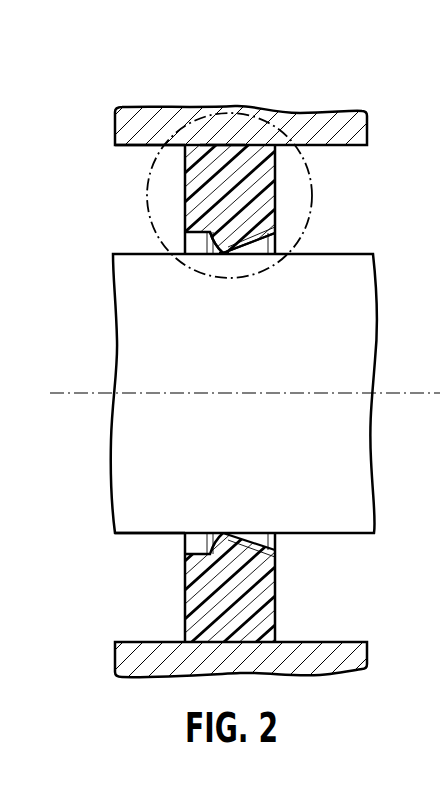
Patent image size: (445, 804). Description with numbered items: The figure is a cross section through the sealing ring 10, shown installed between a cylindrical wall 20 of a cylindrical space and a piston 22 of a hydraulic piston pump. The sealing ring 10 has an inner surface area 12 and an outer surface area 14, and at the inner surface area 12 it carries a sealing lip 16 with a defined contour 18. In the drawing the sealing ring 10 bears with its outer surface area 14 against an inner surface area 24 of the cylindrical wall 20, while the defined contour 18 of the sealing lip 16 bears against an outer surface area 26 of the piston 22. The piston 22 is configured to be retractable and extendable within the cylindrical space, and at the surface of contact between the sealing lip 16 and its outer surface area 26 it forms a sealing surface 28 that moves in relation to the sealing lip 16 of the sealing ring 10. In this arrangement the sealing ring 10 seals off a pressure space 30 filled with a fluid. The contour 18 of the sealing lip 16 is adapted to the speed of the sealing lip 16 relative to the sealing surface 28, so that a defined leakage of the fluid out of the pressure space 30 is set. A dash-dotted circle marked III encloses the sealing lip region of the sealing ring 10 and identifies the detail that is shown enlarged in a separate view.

The sealing ring 10 is at (270, 188).
The inner surface area 12 is at (216, 248).
The outer surface area 14 is at (222, 133).
The sealing lip 16 is at (258, 223).
The defined contour 18 is at (260, 540).
The cylindrical wall 20 is at (282, 118).
The piston 22 is at (358, 353).
The inner surface area of the cylindrical wall 24 is at (140, 147).
The outer surface area of the piston 26 is at (120, 535).
The sealing surface 28 is at (225, 255).
The pressure space 30 is at (69, 360).
The detail circle for FIG. 3 III is at (147, 202).